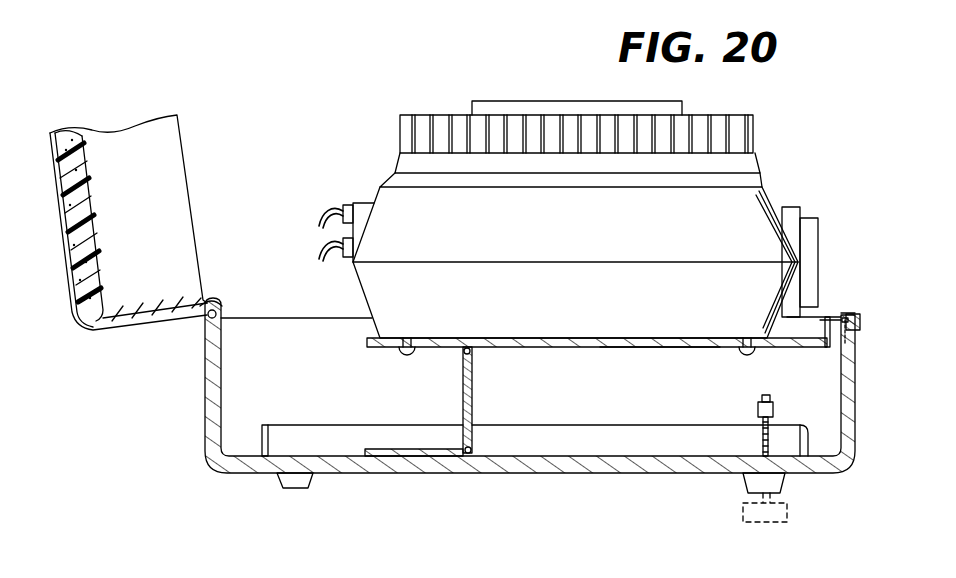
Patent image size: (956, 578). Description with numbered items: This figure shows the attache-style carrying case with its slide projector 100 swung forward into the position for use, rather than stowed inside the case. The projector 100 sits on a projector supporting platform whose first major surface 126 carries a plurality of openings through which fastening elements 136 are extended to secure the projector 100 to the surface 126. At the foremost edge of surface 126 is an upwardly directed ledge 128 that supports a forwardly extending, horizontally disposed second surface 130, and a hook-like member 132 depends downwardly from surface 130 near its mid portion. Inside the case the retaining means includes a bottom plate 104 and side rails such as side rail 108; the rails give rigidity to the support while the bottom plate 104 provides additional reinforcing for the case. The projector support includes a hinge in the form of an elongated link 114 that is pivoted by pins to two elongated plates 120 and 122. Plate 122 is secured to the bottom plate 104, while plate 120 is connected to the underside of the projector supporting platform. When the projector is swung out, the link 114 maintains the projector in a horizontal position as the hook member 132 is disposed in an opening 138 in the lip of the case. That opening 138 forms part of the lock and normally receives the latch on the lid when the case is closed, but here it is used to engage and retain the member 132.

The slide projector 100 is at (762, 198).
The elongated plate 120 is at (540, 348).
The first major surface 126 is at (657, 347).
The fastening elements 136 is at (408, 338).
The elongated link 114 is at (472, 392).
The bottom plate 104 is at (347, 453).
The side rail 108 is at (270, 424).
The elongated plate 122 is at (420, 448).
The upwardly directed ledge 128 is at (822, 317).
The second surface 130 is at (852, 312).
The hook-like member 132 is at (860, 317).
The opening 138 is at (860, 326).